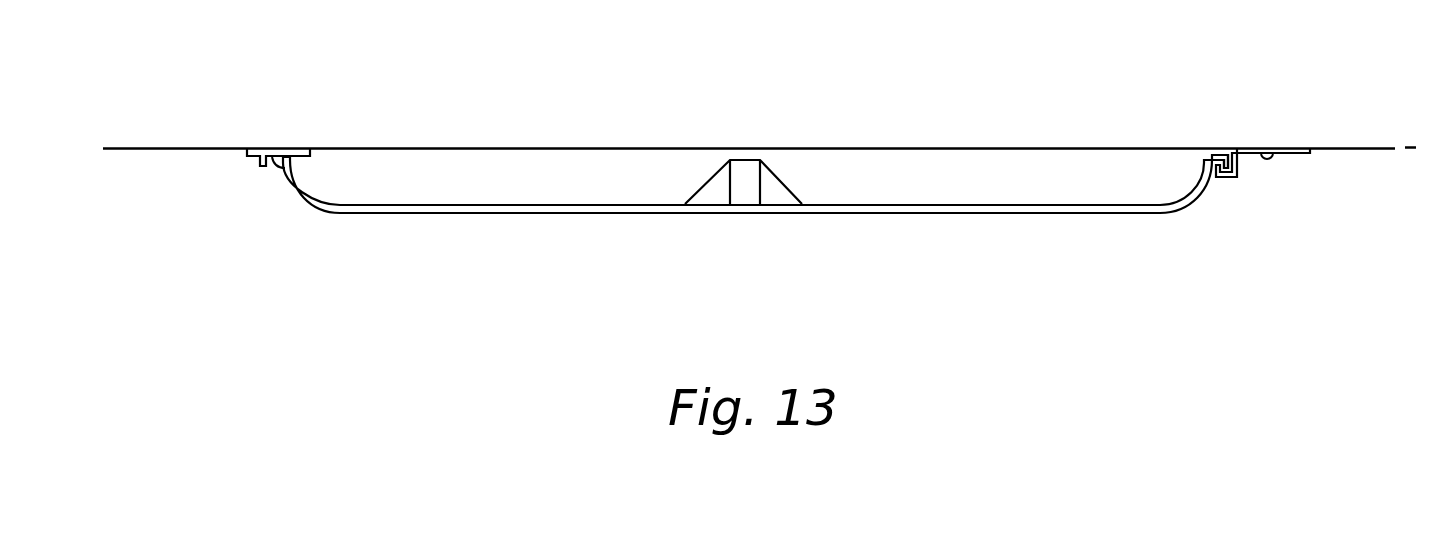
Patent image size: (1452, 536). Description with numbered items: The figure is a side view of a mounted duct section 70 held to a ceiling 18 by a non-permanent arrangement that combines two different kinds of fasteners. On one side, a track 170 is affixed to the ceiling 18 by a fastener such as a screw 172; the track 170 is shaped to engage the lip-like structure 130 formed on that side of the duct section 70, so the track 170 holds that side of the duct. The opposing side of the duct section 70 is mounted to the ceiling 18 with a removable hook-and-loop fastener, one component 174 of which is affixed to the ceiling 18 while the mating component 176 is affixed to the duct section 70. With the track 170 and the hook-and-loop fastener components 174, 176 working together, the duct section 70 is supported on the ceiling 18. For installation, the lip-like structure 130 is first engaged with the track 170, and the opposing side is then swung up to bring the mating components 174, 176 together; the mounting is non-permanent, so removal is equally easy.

The ceiling 18 is at (181, 152).
The duct section 70 is at (527, 206).
The lip-like structure 130 is at (1221, 145).
The track 170 is at (1306, 160).
The screw 172 is at (1267, 163).
The fastener component 174 is at (283, 145).
The mating component 176 is at (244, 160).